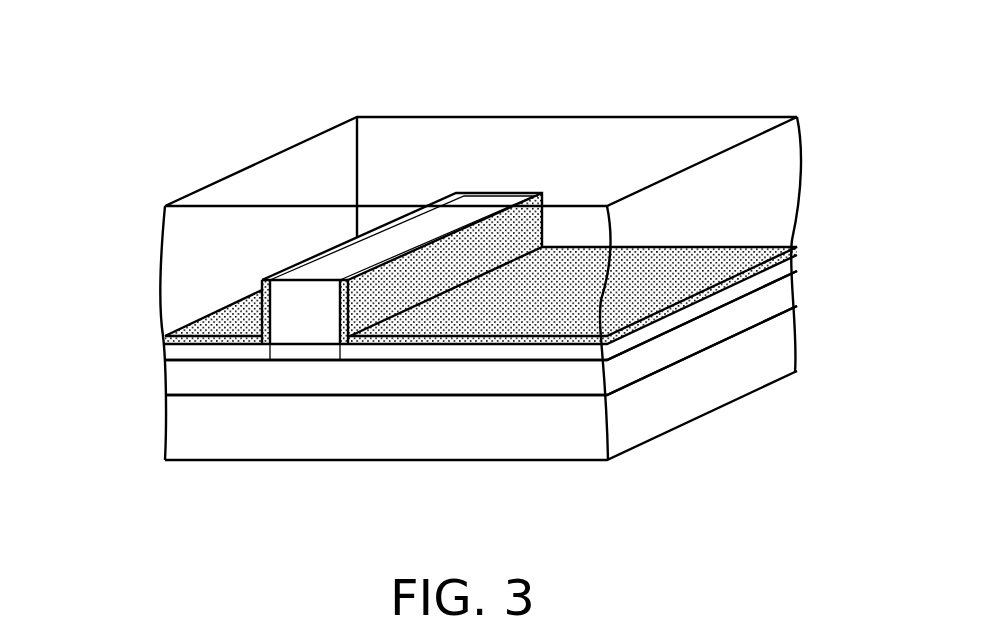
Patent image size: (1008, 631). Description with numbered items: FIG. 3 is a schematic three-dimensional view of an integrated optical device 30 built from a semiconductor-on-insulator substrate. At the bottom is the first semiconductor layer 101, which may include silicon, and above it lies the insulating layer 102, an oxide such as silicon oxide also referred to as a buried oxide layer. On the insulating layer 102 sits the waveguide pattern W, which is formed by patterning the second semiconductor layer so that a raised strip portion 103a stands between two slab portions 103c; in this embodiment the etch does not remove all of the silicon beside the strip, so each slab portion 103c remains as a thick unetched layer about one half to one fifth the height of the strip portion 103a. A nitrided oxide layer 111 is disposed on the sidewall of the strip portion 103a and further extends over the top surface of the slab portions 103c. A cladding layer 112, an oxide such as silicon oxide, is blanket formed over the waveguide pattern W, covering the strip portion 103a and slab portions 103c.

The integrated optical device 30 is at (774, 90).
The cladding layer 112 is at (777, 173).
The nitrided oxide layer 111 is at (780, 272).
The insulating layer 102 is at (780, 302).
The first semiconductor layer 101 is at (780, 352).
The strip portion 103a is at (282, 320).
The slab portion 103c is at (212, 357).
The waveguide pattern W is at (422, 307).